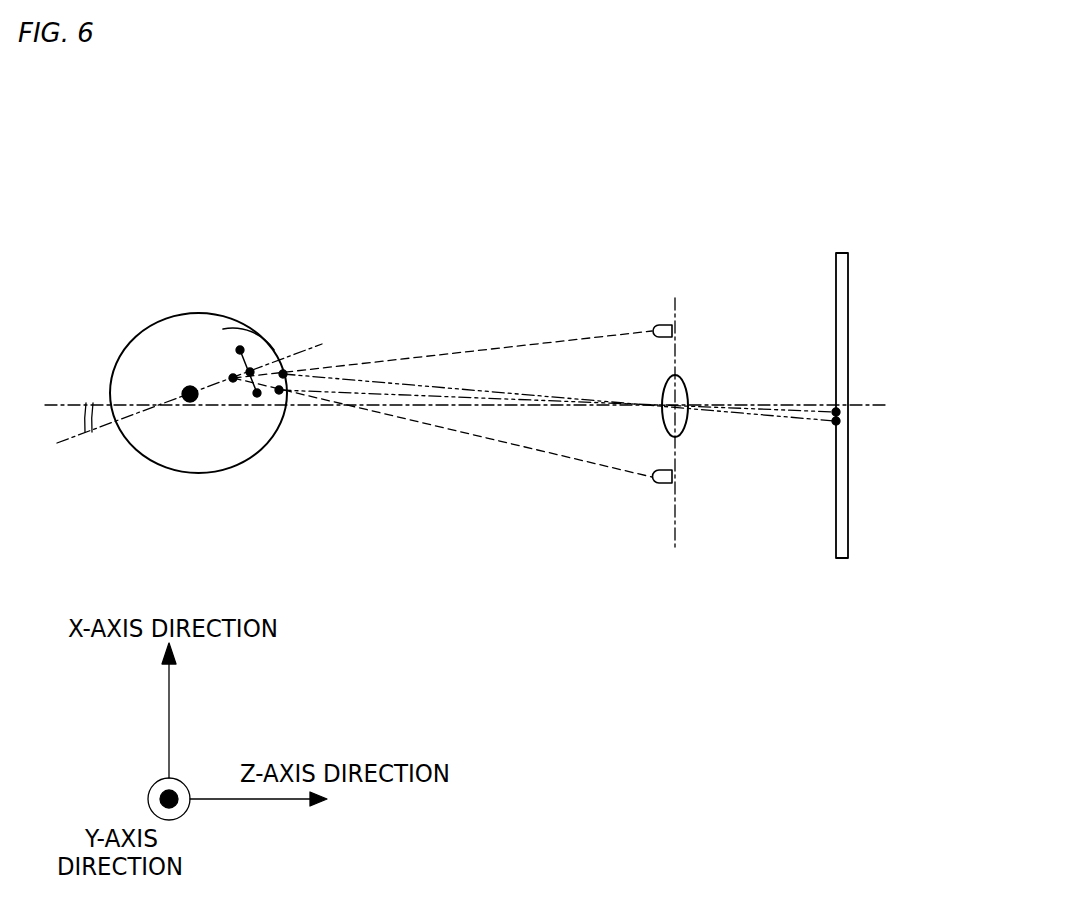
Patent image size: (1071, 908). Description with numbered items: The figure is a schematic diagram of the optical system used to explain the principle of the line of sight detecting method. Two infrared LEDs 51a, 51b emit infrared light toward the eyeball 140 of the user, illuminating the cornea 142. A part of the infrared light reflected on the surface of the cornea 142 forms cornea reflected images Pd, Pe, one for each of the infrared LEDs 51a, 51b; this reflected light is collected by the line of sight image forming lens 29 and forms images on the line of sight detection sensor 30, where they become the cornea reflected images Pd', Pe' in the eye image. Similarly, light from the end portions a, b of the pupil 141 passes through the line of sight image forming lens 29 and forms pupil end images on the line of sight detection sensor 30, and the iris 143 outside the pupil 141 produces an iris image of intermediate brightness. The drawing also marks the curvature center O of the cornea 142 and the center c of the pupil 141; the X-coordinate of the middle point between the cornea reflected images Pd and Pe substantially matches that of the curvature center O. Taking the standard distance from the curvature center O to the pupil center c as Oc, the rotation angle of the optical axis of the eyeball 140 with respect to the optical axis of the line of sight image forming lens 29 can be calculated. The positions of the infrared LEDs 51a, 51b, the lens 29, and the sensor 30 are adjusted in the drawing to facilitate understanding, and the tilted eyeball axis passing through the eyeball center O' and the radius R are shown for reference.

The eyeball 140 is at (140, 336).
The pupil 141 is at (254, 338).
The cornea 142 is at (283, 342).
The iris 143 is at (240, 347).
The infrared LED 51a is at (660, 484).
The infrared LED 51b is at (659, 325).
The line of sight image forming lens 29 is at (670, 428).
The line of sight detection sensor 30 is at (837, 558).
The curvature center of the cornea O is at (182, 221).
The center of eyeball rotation O' is at (139, 344).
The standard distance from curvature center to pupil center Oc is at (236, 384).
The radius of corneal curvature R is at (249, 378).
The end portion of the pupil a is at (241, 350).
The end portion of the pupil b is at (257, 396).
The pupil center c is at (252, 368).
The cornea reflected image Pd is at (555, 479).
The cornea reflected image Pe is at (557, 462).
The cornea reflected image in the eye image Pd' is at (883, 435).
The cornea reflected image in the eye image Pe' is at (884, 475).